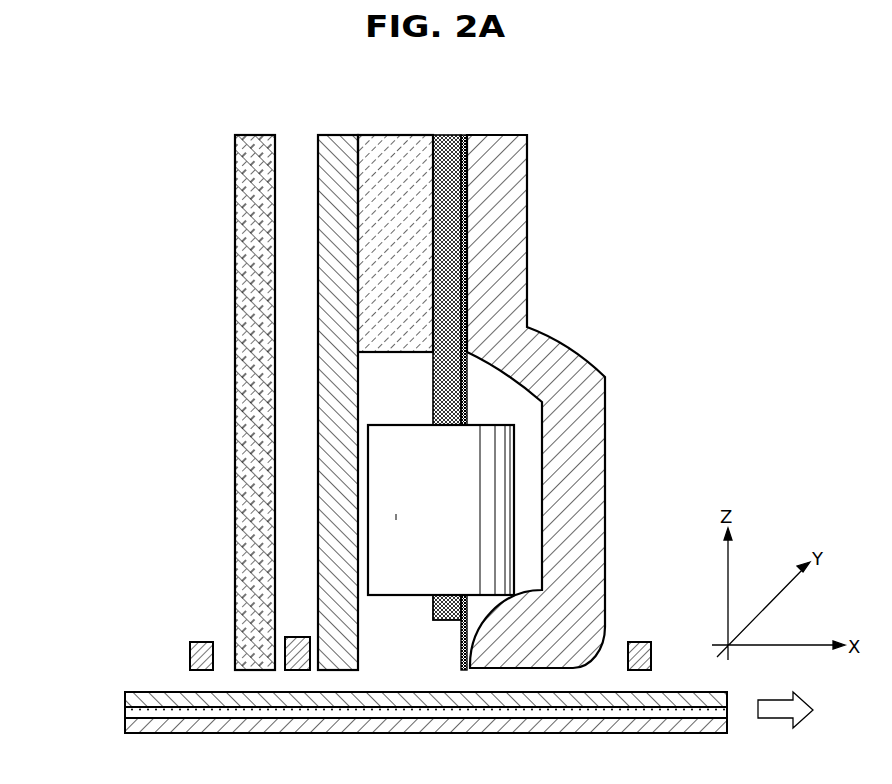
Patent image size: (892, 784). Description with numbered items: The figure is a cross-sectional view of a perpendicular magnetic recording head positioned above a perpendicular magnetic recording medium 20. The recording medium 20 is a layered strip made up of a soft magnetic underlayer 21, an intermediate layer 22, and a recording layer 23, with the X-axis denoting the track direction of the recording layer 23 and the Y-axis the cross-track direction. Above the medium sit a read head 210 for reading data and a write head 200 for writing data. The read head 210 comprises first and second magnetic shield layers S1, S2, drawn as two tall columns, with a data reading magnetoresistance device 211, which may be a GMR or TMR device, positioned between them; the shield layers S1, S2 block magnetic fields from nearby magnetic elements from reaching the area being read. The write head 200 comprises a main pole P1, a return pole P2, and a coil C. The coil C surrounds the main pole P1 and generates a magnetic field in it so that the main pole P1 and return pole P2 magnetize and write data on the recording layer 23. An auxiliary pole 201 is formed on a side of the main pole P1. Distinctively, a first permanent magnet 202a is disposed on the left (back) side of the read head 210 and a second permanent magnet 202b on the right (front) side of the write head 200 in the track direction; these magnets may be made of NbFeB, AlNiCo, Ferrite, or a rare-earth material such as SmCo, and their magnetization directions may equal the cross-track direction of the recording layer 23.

The read head 210 is at (245, 107).
The write head 200 is at (527, 107).
The auxiliary pole 201 is at (433, 612).
The data reading magnetoresistance device 211 is at (296, 637).
The first permanent magnet 202a is at (197, 642).
The second permanent magnet 202b is at (645, 642).
The perpendicular magnetic recording medium 20 is at (62, 670).
The soft magnetic underlayer 21 is at (125, 727).
The intermediate layer 22 is at (125, 712).
The recording layer 23 is at (125, 697).
The first magnetic shield layer S1 is at (323, 392).
The second magnetic shield layer S2 is at (240, 455).
The coil C is at (382, 503).
The main pole P1 is at (460, 657).
The return pole P2 is at (595, 562).